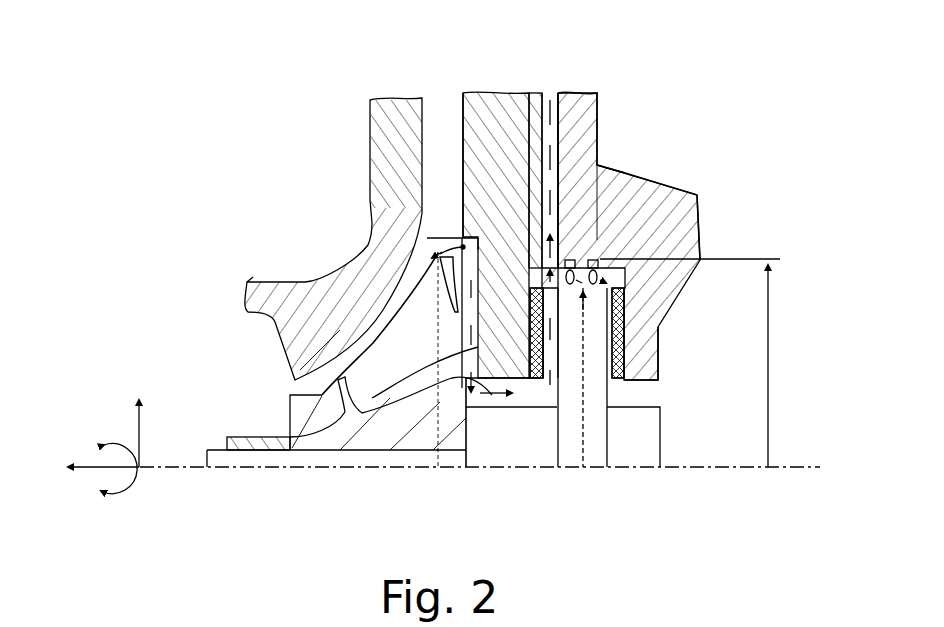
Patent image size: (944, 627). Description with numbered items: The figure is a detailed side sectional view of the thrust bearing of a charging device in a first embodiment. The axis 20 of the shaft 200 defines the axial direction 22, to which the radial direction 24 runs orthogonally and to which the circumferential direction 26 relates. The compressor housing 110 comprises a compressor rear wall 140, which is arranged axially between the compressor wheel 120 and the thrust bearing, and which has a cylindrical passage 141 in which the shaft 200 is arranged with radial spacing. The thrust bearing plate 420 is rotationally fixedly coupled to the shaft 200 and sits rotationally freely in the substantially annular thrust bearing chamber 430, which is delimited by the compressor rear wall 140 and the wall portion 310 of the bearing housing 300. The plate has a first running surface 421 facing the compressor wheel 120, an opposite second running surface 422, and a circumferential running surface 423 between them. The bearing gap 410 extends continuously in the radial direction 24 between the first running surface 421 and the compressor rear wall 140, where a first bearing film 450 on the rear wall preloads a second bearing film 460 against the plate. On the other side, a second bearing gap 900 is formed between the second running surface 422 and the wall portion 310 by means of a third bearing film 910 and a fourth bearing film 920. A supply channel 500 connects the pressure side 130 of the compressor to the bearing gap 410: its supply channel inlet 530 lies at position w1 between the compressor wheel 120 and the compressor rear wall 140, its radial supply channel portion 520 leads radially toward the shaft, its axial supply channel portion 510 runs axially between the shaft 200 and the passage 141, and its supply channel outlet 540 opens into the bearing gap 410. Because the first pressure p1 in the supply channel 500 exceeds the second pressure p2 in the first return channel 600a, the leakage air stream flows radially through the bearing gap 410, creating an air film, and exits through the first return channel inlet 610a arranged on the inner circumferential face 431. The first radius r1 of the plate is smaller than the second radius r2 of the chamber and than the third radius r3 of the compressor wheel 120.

The axis 20 is at (805, 467).
The axial direction 22 is at (96, 484).
The radial direction 24 is at (158, 433).
The circumferential direction 26 is at (129, 478).
The compressor housing 110 is at (297, 297).
The compressor wheel 120 is at (318, 462).
The pressure side 130 is at (440, 118).
The compressor rear wall 140 is at (490, 100).
The cylindrical passage 141 is at (470, 415).
The shaft 200 is at (637, 467).
The bearing housing 300 is at (690, 232).
The wall portion 310 is at (690, 200).
The bearing gap 410 is at (607, 152).
The thrust bearing plate 420 is at (618, 378).
The first running surface 421 is at (588, 415).
The second running surface 422 is at (683, 205).
The circumferential running surface 423 is at (632, 222).
The thrust bearing chamber 430 is at (600, 282).
The inner circumferential face 431 is at (598, 215).
The first bearing film 450 is at (443, 255).
The second bearing film 460 is at (510, 400).
The supply channel 500 is at (290, 437).
The axial supply channel portion 510 is at (445, 470).
The radial supply channel portion 520 is at (433, 367).
The supply channel inlet 530 is at (462, 178).
The supply channel outlet 540 is at (568, 360).
The first return channel 600a is at (561, 108).
The first return channel inlet 610a is at (463, 215).
The second bearing gap 900 is at (622, 330).
The third bearing film 910 is at (622, 310).
The fourth bearing film 920 is at (620, 290).
The first pressure p1 is at (445, 250).
The second pressure p2 is at (527, 108).
The position w1 is at (413, 260).
The first radius r1 is at (660, 455).
The second radius r2 is at (768, 360).
The third radius r3 is at (438, 462).